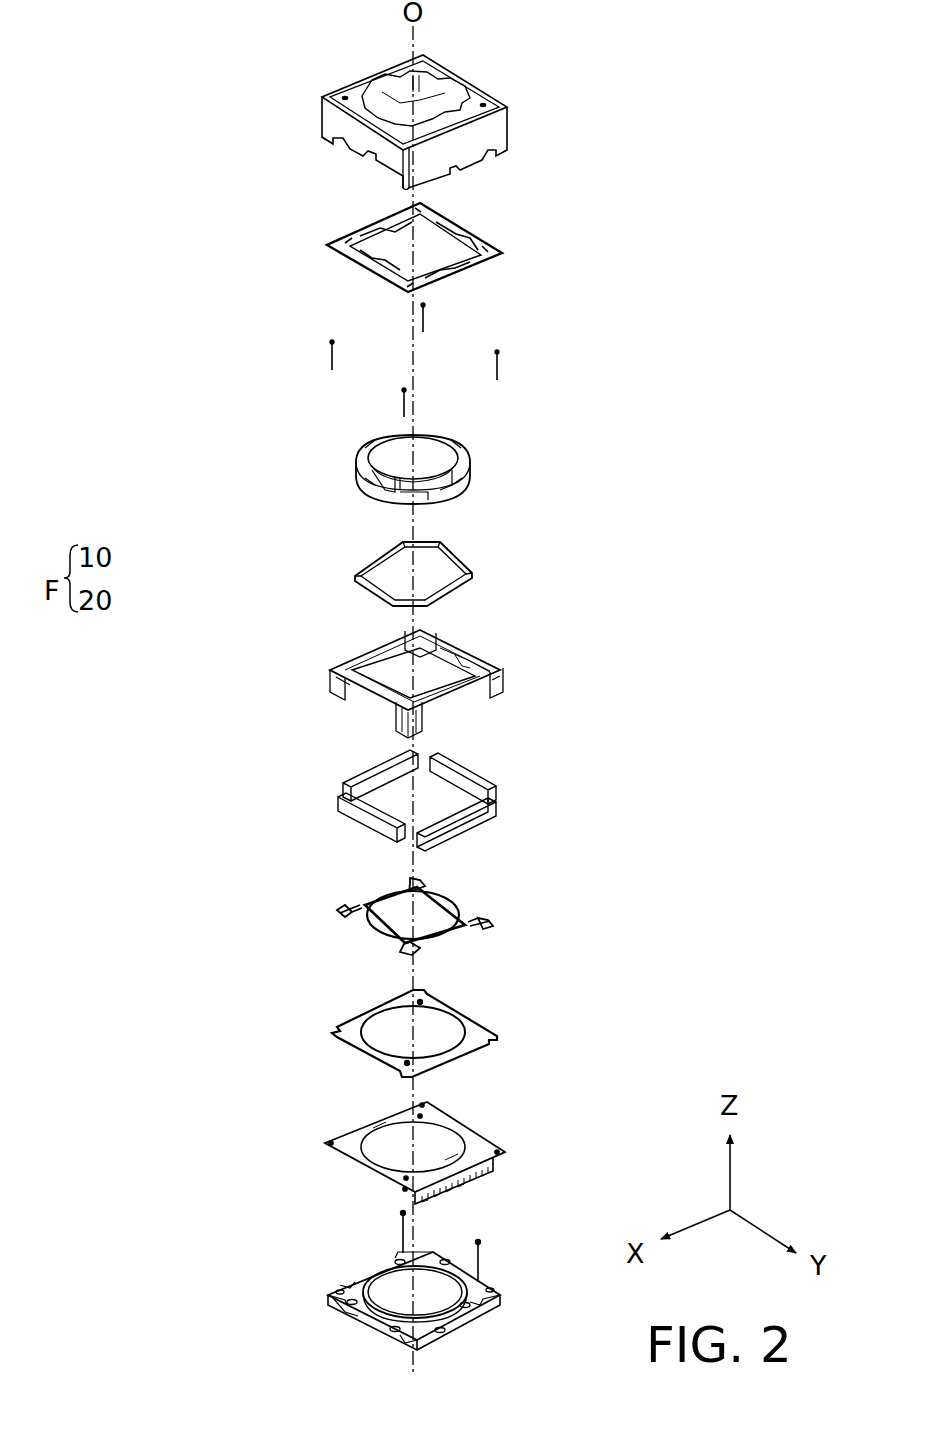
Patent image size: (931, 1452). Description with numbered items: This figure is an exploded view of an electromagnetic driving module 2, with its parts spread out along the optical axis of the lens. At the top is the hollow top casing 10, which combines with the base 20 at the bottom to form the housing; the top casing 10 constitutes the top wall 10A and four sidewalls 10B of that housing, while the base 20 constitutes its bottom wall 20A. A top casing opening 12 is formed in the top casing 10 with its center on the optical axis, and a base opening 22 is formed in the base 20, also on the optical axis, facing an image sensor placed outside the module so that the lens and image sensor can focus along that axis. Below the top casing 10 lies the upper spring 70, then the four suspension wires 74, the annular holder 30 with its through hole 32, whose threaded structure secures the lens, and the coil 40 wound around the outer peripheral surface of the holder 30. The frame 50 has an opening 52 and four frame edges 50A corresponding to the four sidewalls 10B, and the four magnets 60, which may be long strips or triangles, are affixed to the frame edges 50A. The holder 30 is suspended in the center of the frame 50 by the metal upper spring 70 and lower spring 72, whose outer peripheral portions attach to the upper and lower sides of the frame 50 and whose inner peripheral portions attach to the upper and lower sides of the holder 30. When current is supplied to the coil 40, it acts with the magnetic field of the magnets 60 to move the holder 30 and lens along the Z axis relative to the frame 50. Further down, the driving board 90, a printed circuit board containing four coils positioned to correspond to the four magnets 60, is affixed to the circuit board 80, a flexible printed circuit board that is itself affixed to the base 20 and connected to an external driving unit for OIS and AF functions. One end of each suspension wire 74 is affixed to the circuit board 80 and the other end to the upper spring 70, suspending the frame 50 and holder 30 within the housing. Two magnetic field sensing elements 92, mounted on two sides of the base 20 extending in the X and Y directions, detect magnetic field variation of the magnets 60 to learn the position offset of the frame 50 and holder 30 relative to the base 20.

The electromagnetic driving module 2 is at (86, 25).
The top casing 10 is at (391, 114).
The top wall 10A is at (355, 93).
The sidewalls 10B is at (367, 152).
The top casing opening 12 is at (432, 112).
The upper spring 70 is at (308, 237).
The suspension wires 74 is at (498, 352).
The holder 30 is at (399, 468).
The through hole 32 is at (430, 470).
The coil 40 is at (335, 559).
The frame 50 is at (399, 674).
The opening 52 is at (457, 678).
The frame edges 50A is at (348, 690).
The magnets 60 is at (340, 805).
The lower spring 72 is at (305, 896).
The driving board 90 is at (305, 1016).
The circuit board 80 is at (305, 1137).
The magnetic field sensing elements 92 is at (400, 1213).
The base 20 is at (359, 1300).
The base opening 22 is at (397, 1285).
The bottom wall 20A is at (358, 1313).